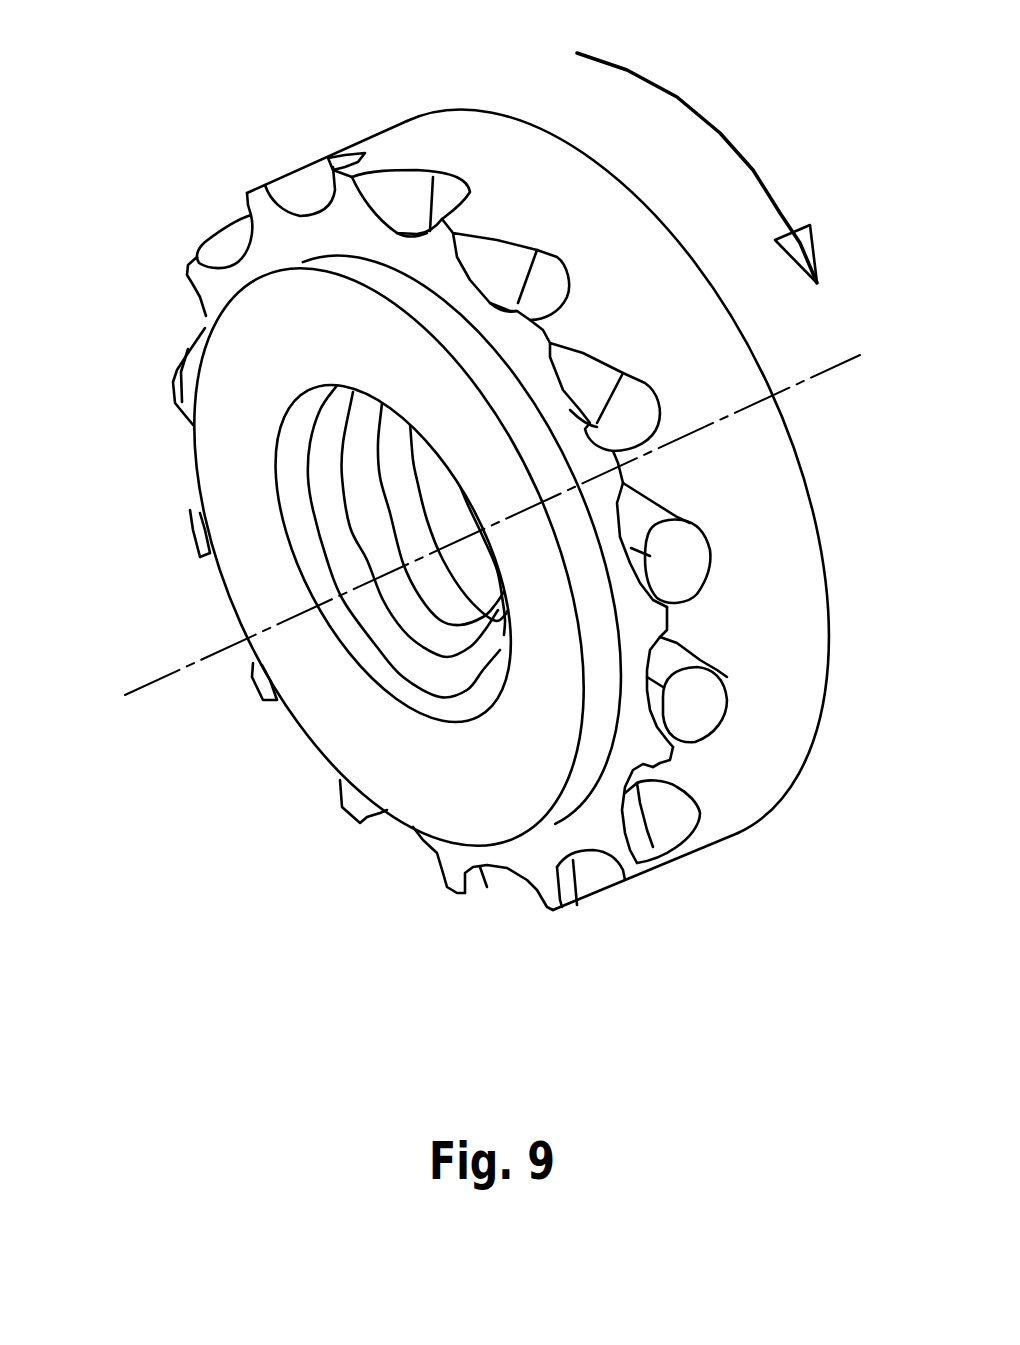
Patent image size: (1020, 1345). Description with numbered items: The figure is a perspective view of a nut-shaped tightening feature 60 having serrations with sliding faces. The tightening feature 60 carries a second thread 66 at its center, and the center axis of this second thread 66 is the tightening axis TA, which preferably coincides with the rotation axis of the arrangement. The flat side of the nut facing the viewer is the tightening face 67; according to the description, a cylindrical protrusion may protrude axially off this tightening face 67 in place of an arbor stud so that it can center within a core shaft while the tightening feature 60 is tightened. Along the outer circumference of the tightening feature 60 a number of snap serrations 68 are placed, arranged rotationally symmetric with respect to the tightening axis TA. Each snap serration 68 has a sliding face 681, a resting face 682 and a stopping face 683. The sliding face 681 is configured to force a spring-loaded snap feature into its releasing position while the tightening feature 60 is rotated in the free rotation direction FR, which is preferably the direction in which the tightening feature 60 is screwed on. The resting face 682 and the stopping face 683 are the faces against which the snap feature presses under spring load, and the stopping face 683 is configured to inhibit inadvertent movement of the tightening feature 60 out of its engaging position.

The tightening feature 60 is at (493, 531).
The second thread 66 is at (295, 512).
The tightening face 67 is at (237, 395).
The snap serration 68 is at (783, 699).
The sliding face 681 is at (673, 650).
The resting face 682 is at (693, 707).
The stopping face 683 is at (667, 723).
The tightening axis TA is at (178, 667).
The free rotation direction FR is at (727, 137).